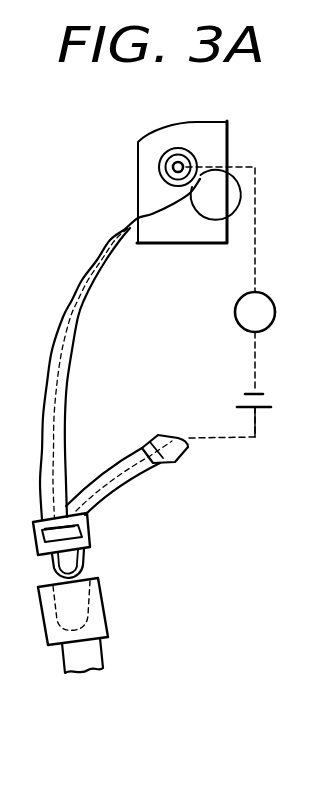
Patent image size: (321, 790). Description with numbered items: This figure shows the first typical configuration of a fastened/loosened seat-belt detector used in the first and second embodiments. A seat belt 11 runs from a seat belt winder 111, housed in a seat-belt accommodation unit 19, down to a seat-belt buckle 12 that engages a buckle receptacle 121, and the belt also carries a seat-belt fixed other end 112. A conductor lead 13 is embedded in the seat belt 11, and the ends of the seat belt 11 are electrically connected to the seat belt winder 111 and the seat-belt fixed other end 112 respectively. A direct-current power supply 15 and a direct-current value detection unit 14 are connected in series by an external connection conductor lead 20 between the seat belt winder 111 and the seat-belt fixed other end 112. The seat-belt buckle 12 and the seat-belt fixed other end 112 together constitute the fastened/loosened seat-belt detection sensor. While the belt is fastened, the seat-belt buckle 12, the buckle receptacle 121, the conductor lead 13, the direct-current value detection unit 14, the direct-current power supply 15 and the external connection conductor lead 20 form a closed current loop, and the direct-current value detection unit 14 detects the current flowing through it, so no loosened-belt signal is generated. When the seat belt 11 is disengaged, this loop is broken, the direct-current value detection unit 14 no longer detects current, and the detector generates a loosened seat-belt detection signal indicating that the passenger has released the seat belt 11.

The seat belt 11 is at (63, 418).
The seat belt winder 111 is at (170, 166).
The seat-belt fixed other end 112 is at (173, 466).
The seat-belt buckle 12 is at (89, 553).
The buckle receptacle 121 is at (107, 613).
The conductor lead 13 is at (70, 346).
The direct-current value detection unit 14 is at (273, 293).
The direct-current power supply 15 is at (262, 408).
The seat-belt accommodation unit 19 is at (227, 148).
The external connection conductor lead 20 is at (256, 366).